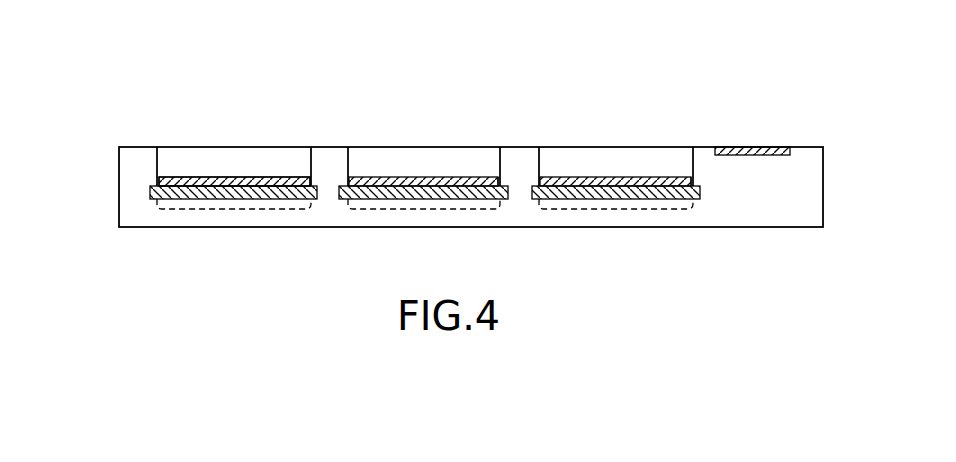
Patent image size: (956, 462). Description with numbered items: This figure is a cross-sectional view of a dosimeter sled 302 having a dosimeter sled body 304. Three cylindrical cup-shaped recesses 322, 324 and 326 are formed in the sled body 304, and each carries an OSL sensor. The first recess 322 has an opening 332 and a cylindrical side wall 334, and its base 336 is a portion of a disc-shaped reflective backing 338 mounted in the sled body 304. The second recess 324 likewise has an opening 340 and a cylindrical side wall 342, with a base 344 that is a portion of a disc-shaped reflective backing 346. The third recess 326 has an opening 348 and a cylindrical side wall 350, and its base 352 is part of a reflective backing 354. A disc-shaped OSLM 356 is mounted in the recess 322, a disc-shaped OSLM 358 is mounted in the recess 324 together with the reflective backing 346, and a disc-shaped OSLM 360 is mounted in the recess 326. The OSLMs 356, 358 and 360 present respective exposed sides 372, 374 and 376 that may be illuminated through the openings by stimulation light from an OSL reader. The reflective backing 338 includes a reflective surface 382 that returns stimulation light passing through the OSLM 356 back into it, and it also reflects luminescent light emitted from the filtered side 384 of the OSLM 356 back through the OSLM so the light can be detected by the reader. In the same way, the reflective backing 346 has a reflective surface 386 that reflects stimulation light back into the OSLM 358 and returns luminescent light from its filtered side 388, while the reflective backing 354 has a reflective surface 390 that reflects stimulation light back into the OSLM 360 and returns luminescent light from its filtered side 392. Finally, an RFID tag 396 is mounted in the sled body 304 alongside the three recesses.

The dosimeter sled 302 is at (114, 117).
The dosimeter sled body 304 is at (810, 155).
The recess 322 is at (257, 155).
The recess 324 is at (447, 155).
The recess 326 is at (640, 155).
The opening 332 is at (240, 140).
The cylindrical side wall 334 is at (302, 162).
The base 336 is at (234, 211).
The reflective backing 338 is at (148, 194).
The opening 340 is at (429, 140).
The cylindrical side wall 342 is at (492, 162).
The base 344 is at (424, 211).
The reflective backing 346 is at (508, 192).
The opening 348 is at (622, 140).
The cylindrical side wall 350 is at (684, 162).
The base 352 is at (615, 211).
The reflective backing 354 is at (706, 192).
The OSLM 356 is at (156, 182).
The OSLM 358 is at (500, 185).
The OSLM 360 is at (700, 182).
The exposed side 372 is at (200, 170).
The exposed side 374 is at (390, 170).
The exposed side 376 is at (583, 170).
The reflective surface 382 is at (170, 170).
The filtered side 384 is at (271, 205).
The reflective surface 386 is at (365, 170).
The filtered side 388 is at (453, 205).
The reflective surface 390 is at (557, 170).
The filtered side 392 is at (661, 205).
The RFID tag 396 is at (753, 147).